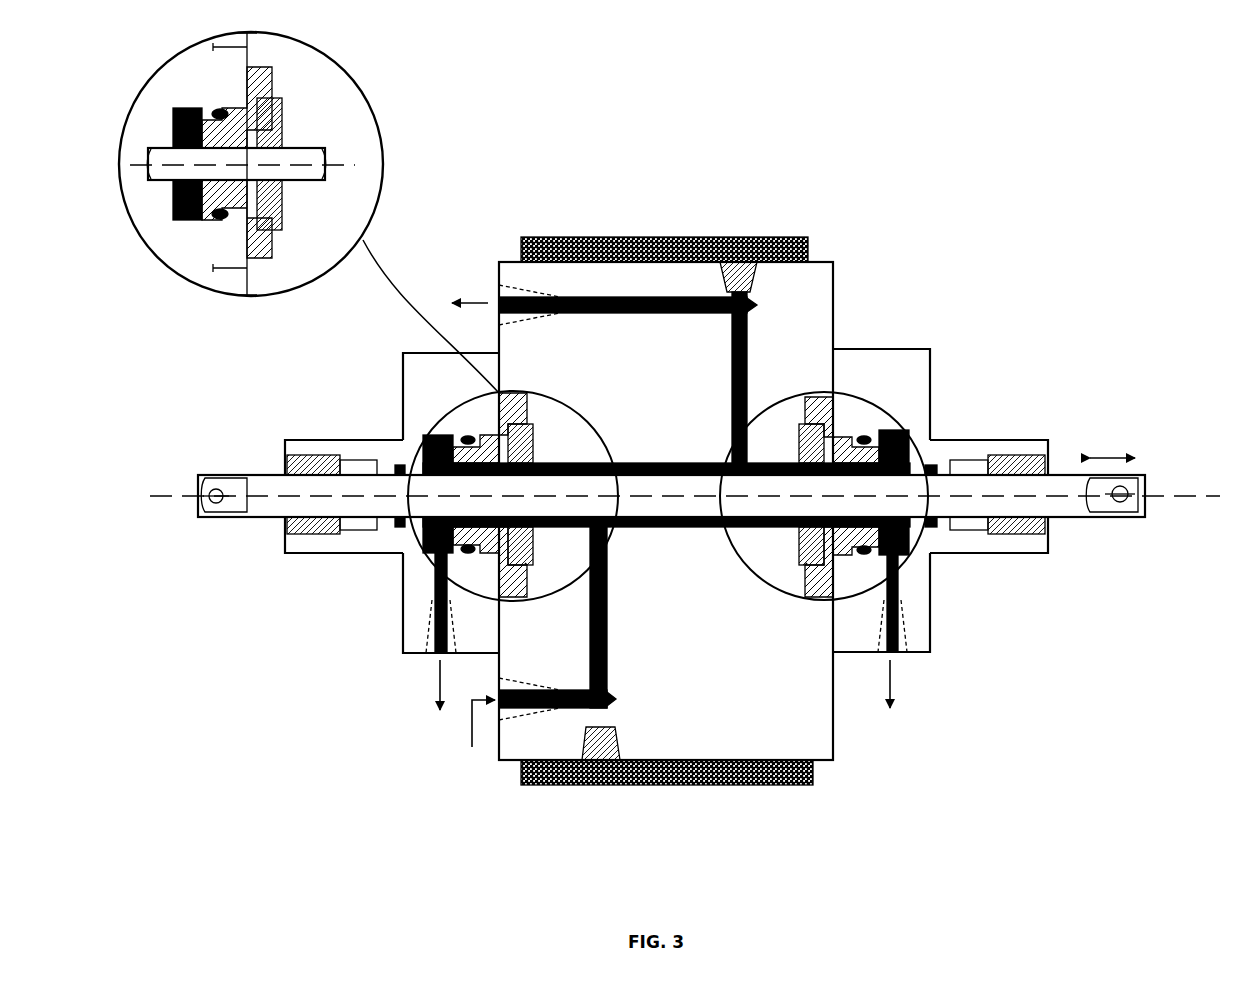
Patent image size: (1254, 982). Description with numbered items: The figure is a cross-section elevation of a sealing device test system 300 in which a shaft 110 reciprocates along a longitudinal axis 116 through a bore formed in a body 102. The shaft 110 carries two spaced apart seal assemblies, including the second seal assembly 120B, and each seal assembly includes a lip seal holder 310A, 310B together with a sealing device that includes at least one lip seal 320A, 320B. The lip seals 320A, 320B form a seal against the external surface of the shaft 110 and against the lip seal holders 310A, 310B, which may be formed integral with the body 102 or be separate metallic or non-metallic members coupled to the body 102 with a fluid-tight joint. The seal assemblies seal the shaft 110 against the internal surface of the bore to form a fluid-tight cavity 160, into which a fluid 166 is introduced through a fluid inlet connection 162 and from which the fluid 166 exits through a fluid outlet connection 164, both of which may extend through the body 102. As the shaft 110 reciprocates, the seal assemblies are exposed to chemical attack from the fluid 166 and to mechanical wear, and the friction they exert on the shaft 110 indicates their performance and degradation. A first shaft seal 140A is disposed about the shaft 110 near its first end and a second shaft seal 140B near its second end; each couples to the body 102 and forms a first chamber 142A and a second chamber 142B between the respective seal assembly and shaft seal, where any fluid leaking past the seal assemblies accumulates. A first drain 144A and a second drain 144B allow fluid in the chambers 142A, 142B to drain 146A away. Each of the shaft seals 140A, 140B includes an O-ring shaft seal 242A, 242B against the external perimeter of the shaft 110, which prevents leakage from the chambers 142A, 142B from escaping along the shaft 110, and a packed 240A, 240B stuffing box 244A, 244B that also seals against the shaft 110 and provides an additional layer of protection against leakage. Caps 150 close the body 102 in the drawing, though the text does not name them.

The sealing device test system 300 is at (1158, 82).
The body 102 is at (640, 353).
The shaft 110 is at (240, 520).
The longitudinal axis 116 is at (1200, 498).
The second seal assembly 120B is at (530, 567).
The first shaft seal 140A is at (403, 353).
The second shaft seal 140B is at (930, 349).
The first chamber 142A is at (423, 437).
The second chamber 142B is at (900, 430).
The first drain 144A is at (433, 600).
The second drain 144B is at (900, 590).
The drain flow 146A is at (440, 686).
The end cap 150 is at (640, 237).
The fluid-tight cavity 160 is at (682, 528).
The fluid inlet connection 162 is at (607, 616).
The fluid outlet connection 164 is at (747, 330).
The fluid 166 is at (480, 303).
The packed shaft seal 240A is at (290, 458).
The packed shaft seal 240B is at (1046, 457).
The O-ring shaft seal 242A is at (398, 462).
The O-ring shaft seal 242B is at (943, 460).
The stuffing box 244A is at (315, 534).
The stuffing box 244B is at (1035, 548).
The lip seal holder 310A is at (524, 398).
The lip seal holder 310B is at (812, 397).
The lip seal 320A is at (534, 448).
The lip seal 320B is at (810, 445).